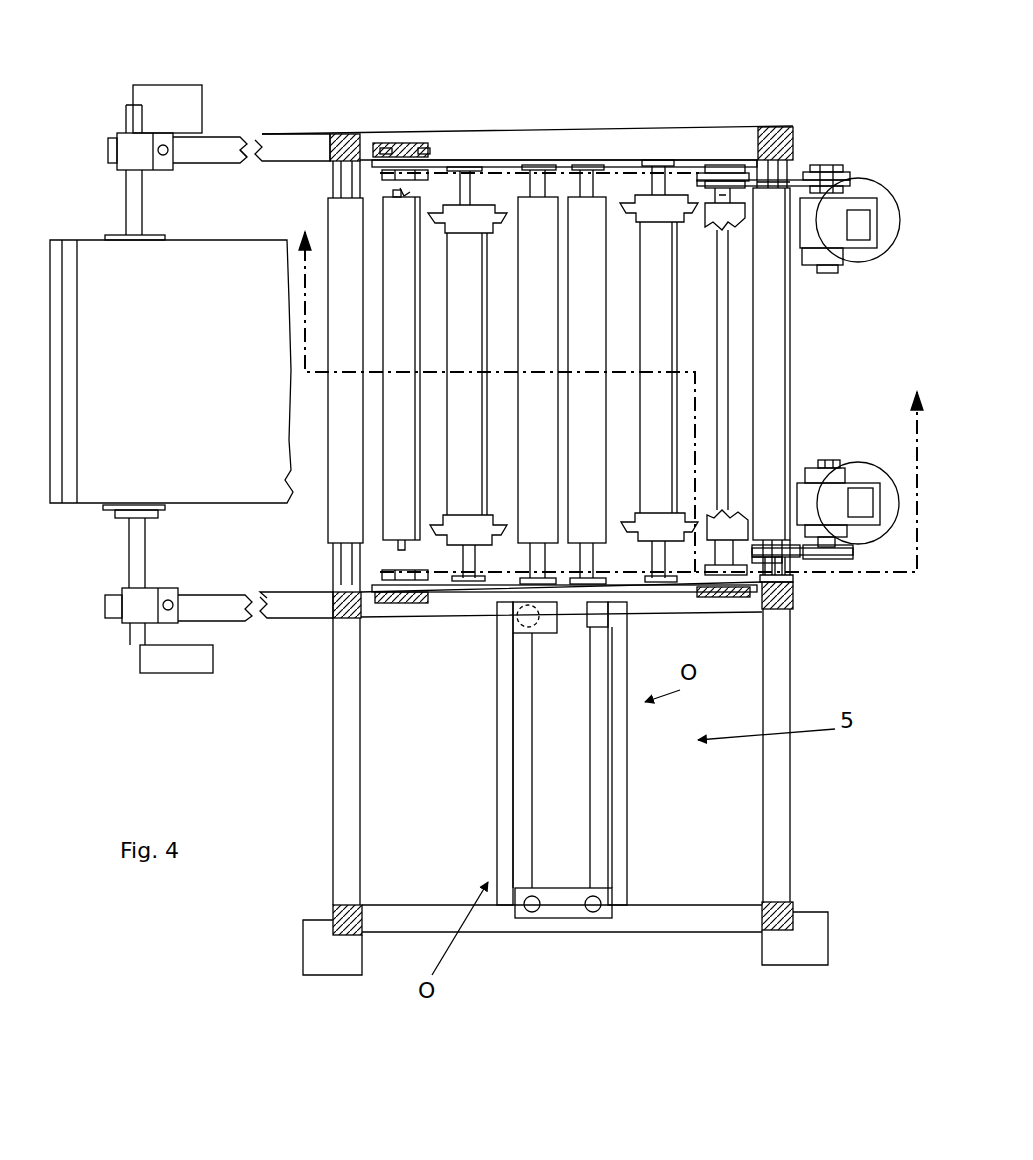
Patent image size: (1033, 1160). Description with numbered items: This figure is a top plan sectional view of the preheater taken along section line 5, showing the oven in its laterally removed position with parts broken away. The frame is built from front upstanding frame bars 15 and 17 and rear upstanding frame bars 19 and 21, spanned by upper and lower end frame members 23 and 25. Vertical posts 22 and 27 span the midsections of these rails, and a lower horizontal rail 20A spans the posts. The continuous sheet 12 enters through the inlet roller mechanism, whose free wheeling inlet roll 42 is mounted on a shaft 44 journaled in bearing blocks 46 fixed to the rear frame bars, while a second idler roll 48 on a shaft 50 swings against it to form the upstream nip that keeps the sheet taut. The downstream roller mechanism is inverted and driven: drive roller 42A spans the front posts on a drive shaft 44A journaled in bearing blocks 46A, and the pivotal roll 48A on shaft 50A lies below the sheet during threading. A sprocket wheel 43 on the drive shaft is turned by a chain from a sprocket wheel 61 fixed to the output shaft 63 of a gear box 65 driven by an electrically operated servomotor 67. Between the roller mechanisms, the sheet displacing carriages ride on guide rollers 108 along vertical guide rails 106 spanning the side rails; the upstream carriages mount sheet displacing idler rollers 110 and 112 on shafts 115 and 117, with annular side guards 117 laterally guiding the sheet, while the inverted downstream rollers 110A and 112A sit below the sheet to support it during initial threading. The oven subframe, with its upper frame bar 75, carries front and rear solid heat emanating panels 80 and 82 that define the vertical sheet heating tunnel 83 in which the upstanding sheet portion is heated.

The section line 5- 5 is at (608, 383).
The sheet 12 is at (248, 505).
The front upstanding frame bar 15 is at (773, 150).
The front upstanding frame bar 17 is at (793, 905).
The rear upstanding frame bar 19 is at (345, 132).
The lower horizontal rail 20A is at (456, 617).
The rear upstanding frame bar 21 is at (358, 928).
The vertical post 22 is at (790, 612).
The upper end frame member 23 is at (793, 760).
The lower end frame member 25 is at (366, 768).
The vertical post 27 is at (345, 602).
The sheet receiving inlet roll 42 is at (345, 268).
The drive roller 42A is at (791, 335).
The sprocket wheel 43 is at (797, 562).
The shaft 44 is at (340, 182).
The drive shaft 44A is at (776, 181).
The bearing block 46 is at (343, 150).
The bearing block 46A is at (768, 140).
The second idler roll 48 is at (395, 300).
The pivotal roll 48A is at (730, 518).
The shaft 50 is at (406, 192).
The shaft 50A is at (727, 556).
The sprocket wheel 61 is at (813, 556).
The output shaft 63 is at (828, 535).
The gear box 65 is at (835, 503).
The servomotor 67 is at (857, 466).
The upper frame bar 75 is at (627, 830).
The front heat emanating panel 80 is at (600, 730).
The rear heat emanating panel 82 is at (526, 784).
The vertical sheet heating tunnel 83 is at (570, 797).
The vertical guide rail 106 is at (397, 142).
The guide roller 108 is at (422, 142).
The sheet displacing idler roller 110 is at (458, 322).
The sheet displacing idler roller 110A is at (588, 393).
The sheet displacing idler roller 112 is at (542, 343).
The sheet displacing idler roller 112A is at (660, 432).
The shaft 115 is at (465, 186).
The shaft 117 is at (548, 188).